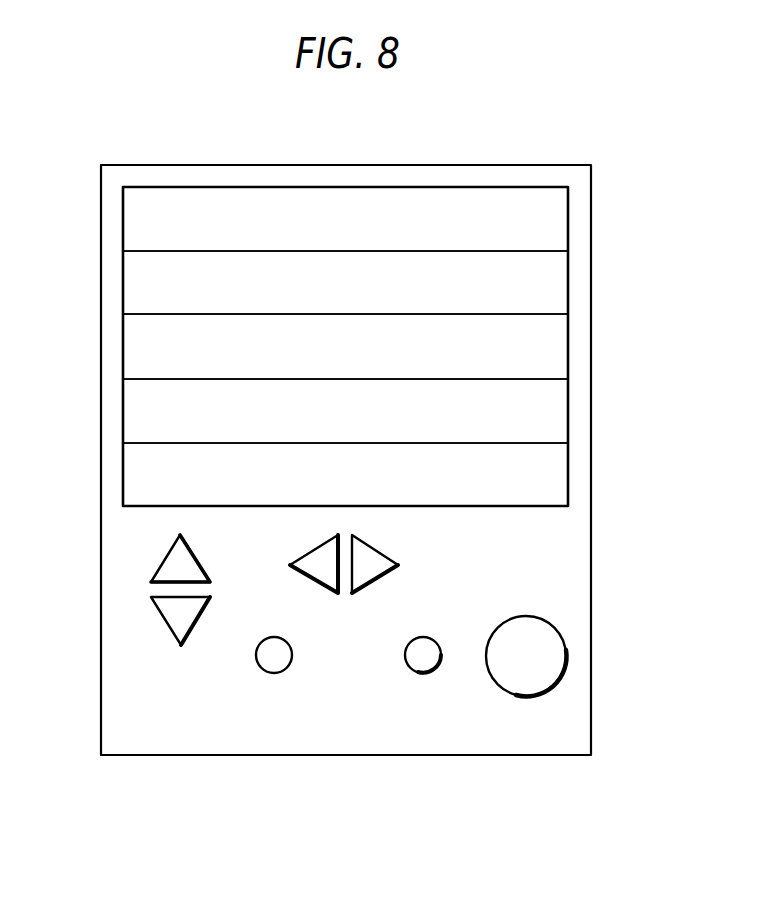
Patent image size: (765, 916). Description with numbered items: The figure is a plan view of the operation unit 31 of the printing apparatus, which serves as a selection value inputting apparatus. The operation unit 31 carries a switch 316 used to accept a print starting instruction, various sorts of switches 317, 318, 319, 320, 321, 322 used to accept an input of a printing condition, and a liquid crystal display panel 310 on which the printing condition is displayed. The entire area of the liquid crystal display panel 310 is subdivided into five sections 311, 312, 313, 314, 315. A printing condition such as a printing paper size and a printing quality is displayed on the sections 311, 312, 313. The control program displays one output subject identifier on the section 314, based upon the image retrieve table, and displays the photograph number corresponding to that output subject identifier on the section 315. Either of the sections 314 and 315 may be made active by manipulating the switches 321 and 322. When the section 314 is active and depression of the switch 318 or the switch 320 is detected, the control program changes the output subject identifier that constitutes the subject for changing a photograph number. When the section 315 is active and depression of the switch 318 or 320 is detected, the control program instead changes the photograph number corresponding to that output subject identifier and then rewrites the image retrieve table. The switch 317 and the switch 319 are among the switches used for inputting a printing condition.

The operation unit 31 is at (468, 166).
The liquid crystal display panel 310 is at (382, 312).
The section 311 is at (568, 216).
The section 312 is at (568, 281).
The section 313 is at (568, 345).
The section 314 is at (568, 410).
The section 315 is at (568, 474).
The switch 316 is at (567, 654).
The switch 317 is at (423, 637).
The switch 318 is at (375, 581).
The switch 319 is at (256, 657).
The switch 320 is at (310, 580).
The switch 321 is at (163, 620).
The switch 322 is at (163, 559).